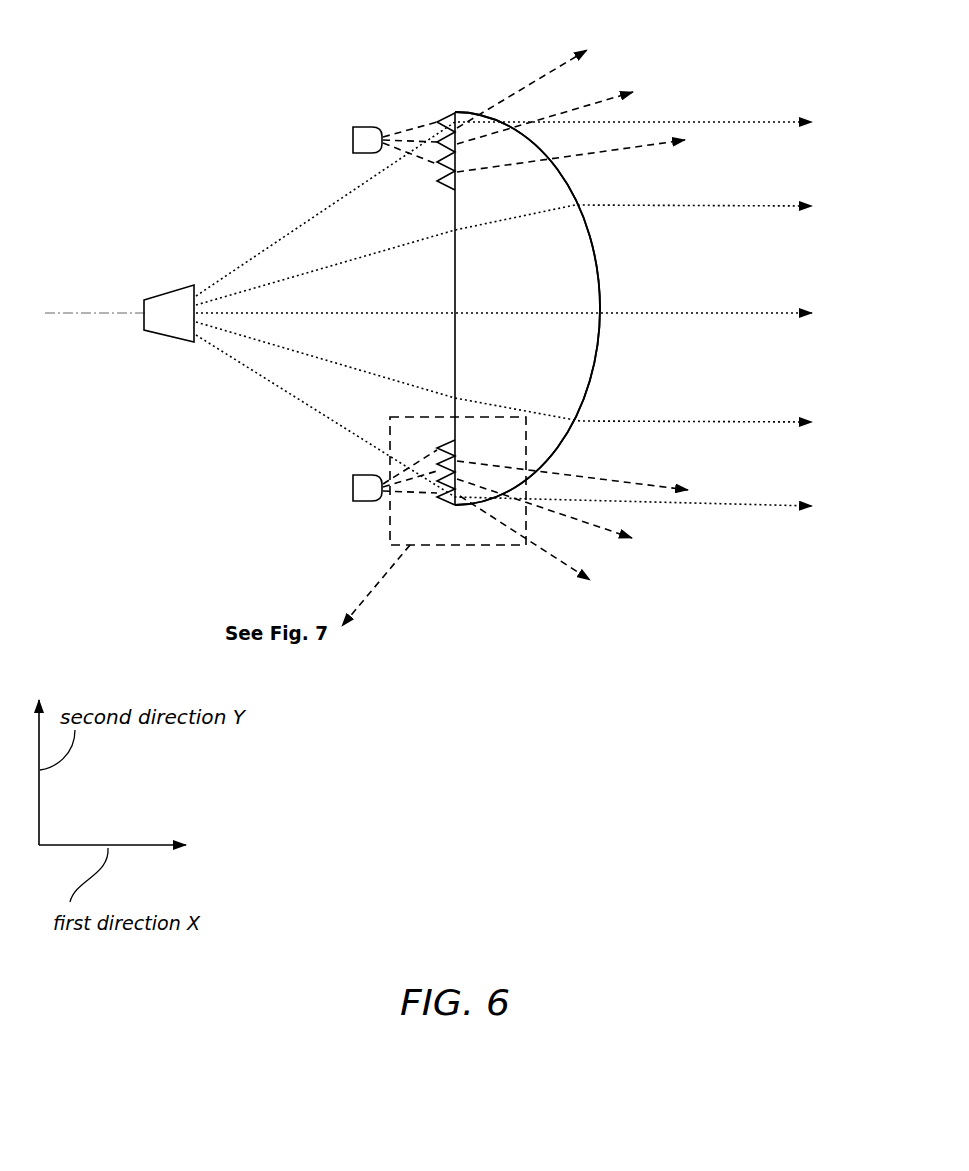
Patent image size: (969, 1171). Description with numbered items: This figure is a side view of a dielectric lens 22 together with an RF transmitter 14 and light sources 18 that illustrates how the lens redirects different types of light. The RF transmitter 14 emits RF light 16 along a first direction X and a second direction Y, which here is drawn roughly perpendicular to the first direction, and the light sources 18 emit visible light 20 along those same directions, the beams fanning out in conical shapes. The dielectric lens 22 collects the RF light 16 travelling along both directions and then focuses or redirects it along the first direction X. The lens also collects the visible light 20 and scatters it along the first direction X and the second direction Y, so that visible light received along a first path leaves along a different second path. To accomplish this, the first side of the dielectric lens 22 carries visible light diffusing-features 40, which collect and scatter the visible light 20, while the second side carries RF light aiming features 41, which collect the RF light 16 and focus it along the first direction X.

The RF transmitter 14 is at (172, 327).
The RF light 16 is at (778, 430).
The light source 18 is at (353, 138).
The visible light 20 is at (621, 72).
The dielectric lens 22 is at (565, 271).
The visible light diffusing-feature 40 is at (444, 109).
The RF light aiming feature 41 is at (612, 339).